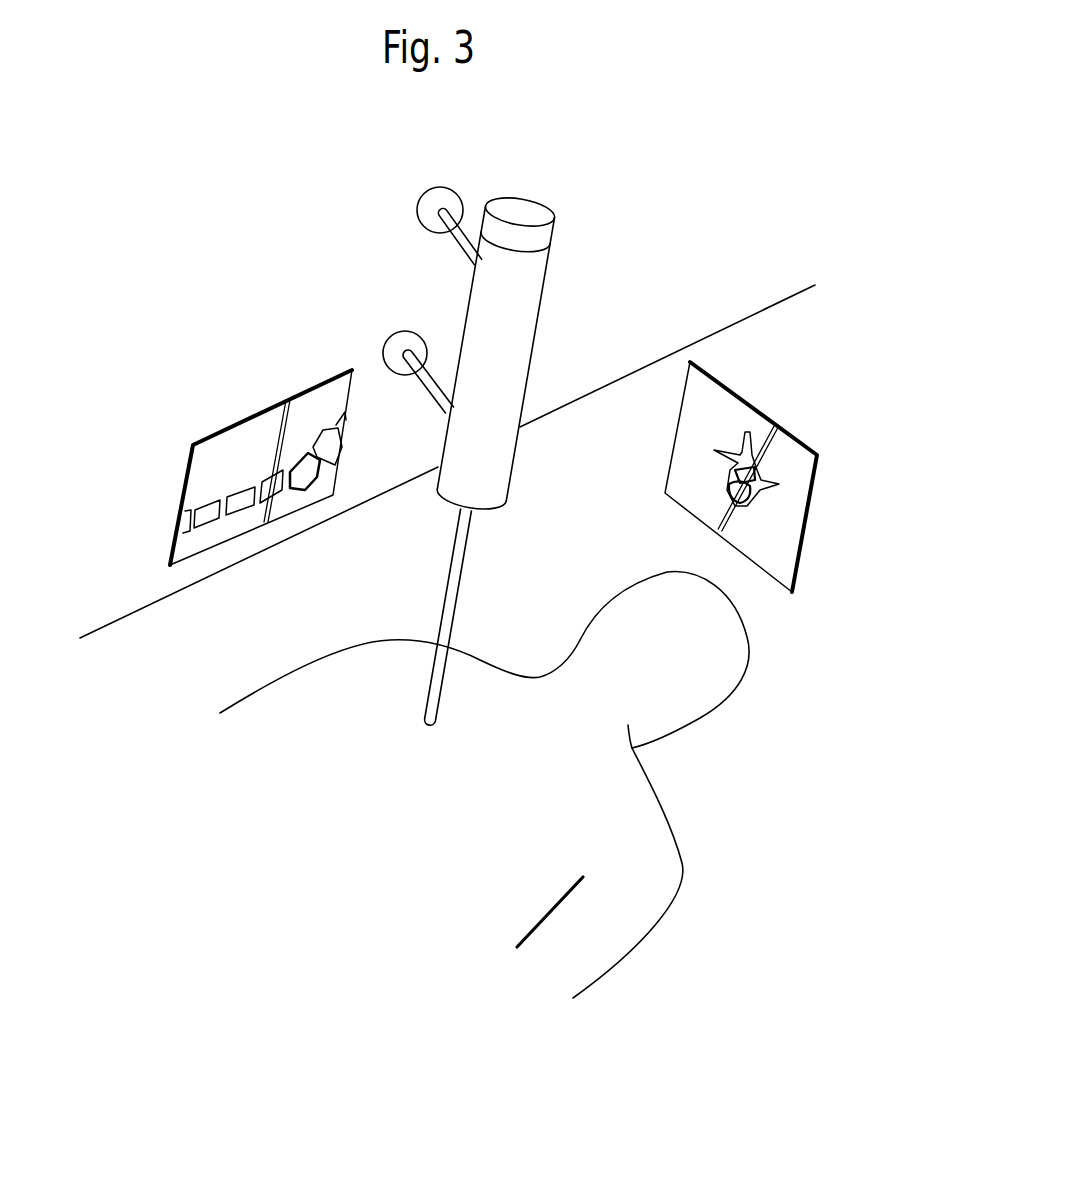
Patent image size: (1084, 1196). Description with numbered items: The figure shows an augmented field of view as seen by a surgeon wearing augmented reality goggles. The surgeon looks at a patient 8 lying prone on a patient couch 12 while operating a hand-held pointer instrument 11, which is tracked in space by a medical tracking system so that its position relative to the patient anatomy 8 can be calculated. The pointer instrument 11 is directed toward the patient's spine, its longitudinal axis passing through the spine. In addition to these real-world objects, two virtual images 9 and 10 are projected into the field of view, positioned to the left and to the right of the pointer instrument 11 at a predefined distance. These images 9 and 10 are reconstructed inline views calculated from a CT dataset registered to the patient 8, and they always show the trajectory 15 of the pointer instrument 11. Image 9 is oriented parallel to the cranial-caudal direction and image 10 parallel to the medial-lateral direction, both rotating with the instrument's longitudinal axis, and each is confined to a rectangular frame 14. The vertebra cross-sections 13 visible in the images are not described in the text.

The patient 8 is at (408, 877).
The virtual image 9 is at (183, 487).
The virtual image 10 is at (817, 493).
The hand-held pointer instrument 11 is at (532, 215).
The patient couch 12 is at (117, 620).
The vertebra 13 is at (310, 475).
The rectangular frame 14 is at (233, 423).
The trajectory 15 is at (290, 423).